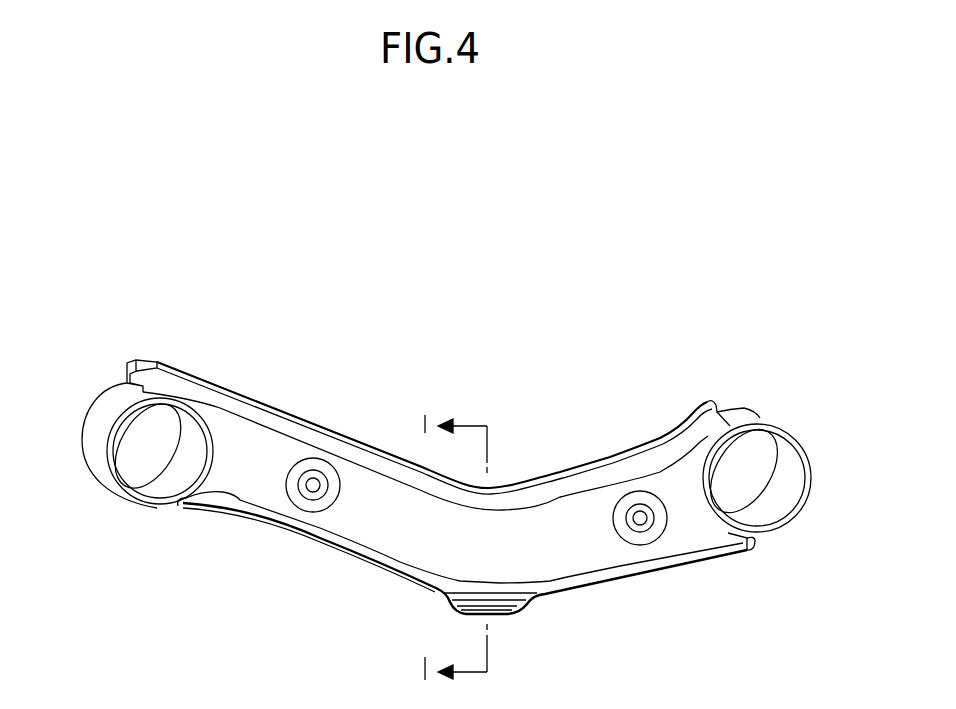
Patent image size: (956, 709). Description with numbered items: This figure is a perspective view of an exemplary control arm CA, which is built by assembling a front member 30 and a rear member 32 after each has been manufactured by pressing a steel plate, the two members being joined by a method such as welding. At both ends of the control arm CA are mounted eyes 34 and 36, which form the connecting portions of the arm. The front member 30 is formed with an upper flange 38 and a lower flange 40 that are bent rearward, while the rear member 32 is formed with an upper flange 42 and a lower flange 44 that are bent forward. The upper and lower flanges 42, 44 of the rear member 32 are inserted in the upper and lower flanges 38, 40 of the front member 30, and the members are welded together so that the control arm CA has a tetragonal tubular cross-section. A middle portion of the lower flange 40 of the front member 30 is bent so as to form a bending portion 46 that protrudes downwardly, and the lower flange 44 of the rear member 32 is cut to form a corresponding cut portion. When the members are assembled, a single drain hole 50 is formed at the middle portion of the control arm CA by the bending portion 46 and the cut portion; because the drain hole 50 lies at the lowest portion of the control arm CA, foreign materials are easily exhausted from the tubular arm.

The control arm CA is at (372, 398).
The front member 30 is at (127, 375).
The rear member 32 is at (243, 477).
The eye 34 is at (97, 422).
The eye 36 is at (788, 452).
The upper flange 38 is at (218, 382).
The lower flange 40 is at (313, 545).
The upper flange 42 is at (168, 378).
The lower flange 44 is at (380, 557).
The bending portion 46 is at (503, 613).
The drain hole 50 is at (438, 604).